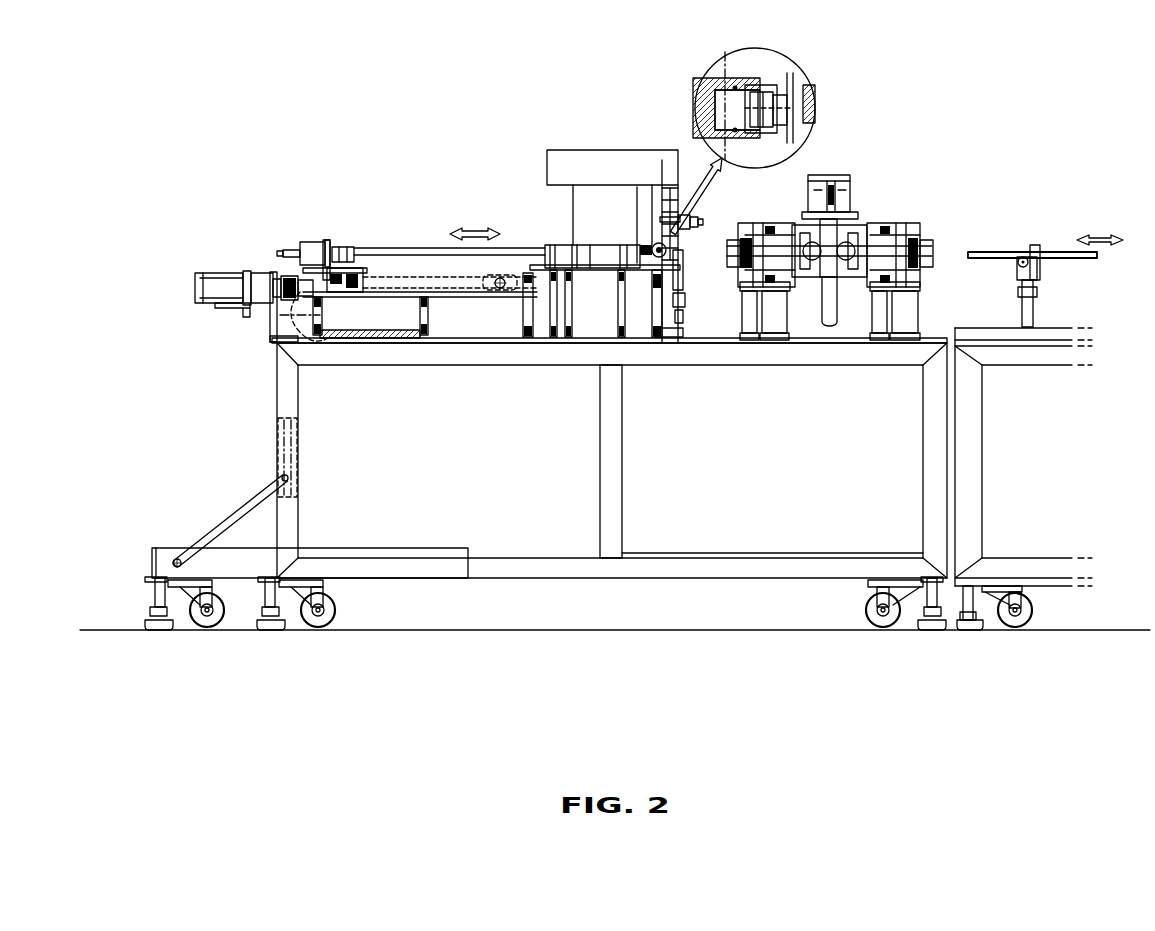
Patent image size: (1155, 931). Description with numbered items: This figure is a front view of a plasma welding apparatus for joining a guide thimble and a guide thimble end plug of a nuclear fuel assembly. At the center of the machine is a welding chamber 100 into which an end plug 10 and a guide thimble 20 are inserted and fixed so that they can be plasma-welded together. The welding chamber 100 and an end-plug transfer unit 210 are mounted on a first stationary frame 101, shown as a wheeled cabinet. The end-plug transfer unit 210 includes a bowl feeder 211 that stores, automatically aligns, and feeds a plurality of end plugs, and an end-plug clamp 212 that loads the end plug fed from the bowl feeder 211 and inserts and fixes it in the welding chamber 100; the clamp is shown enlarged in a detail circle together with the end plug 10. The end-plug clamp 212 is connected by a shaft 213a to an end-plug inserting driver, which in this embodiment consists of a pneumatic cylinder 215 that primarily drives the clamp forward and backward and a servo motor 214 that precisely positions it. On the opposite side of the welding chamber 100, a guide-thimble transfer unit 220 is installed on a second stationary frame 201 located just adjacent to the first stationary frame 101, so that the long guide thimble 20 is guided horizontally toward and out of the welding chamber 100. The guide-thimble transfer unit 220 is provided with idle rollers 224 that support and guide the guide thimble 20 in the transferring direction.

The end plug 10 is at (783, 92).
The guide thimble 20 is at (983, 250).
The welding chamber 100 is at (887, 190).
The first stationary frame 101 is at (640, 567).
The second stationary frame 201 is at (1062, 570).
The end-plug transfer unit 210 is at (510, 205).
The bowl feeder 211 is at (613, 155).
The end-plug clamp 212 is at (745, 78).
The shaft 213a is at (440, 252).
The servo motor 214 is at (228, 272).
The pneumatic cylinder 215 is at (313, 247).
The guide-thimble transfer unit 220 is at (1052, 238).
The idle rollers 224 is at (1027, 262).